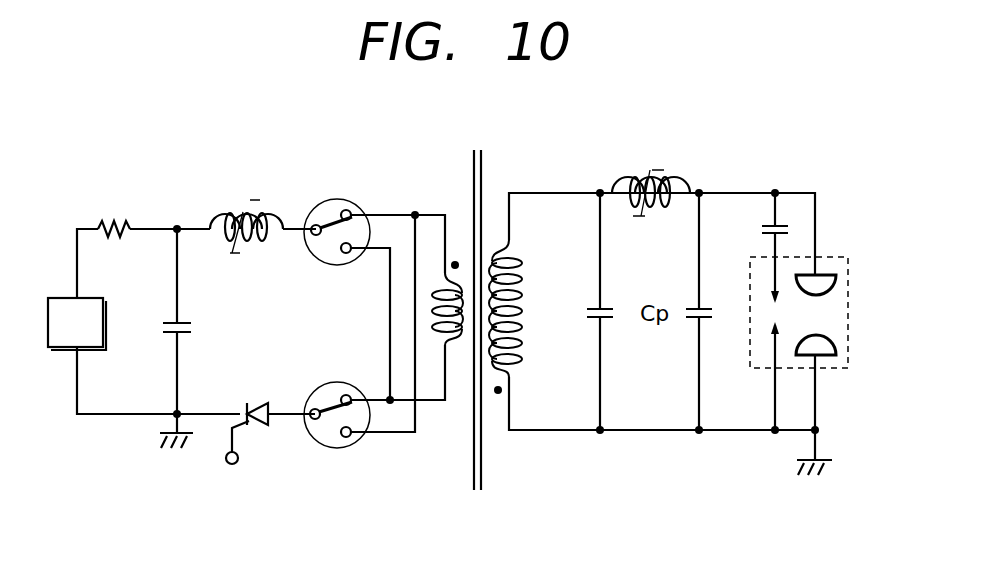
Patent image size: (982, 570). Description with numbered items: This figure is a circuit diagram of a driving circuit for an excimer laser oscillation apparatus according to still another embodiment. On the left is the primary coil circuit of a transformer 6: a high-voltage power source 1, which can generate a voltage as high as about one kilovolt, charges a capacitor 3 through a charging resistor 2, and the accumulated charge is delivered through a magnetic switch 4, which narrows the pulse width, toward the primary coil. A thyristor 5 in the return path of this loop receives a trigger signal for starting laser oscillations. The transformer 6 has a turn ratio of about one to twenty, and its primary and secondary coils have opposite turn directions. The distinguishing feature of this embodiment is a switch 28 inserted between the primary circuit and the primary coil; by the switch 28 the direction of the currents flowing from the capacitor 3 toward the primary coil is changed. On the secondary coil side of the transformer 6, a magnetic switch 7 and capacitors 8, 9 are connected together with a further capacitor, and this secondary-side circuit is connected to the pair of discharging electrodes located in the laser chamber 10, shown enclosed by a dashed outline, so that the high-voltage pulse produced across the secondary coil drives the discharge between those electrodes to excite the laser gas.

The high-voltage power source 1 is at (105, 312).
The charging resistor 2 is at (116, 223).
The capacitor 3 is at (186, 320).
The magnetic switch 4 is at (238, 210).
The thyristor 5 is at (257, 404).
The transformer 6 is at (480, 143).
The magnetic switch 7 is at (643, 176).
The capacitor 8 is at (608, 306).
The capacitor 9 is at (760, 227).
The laser chamber 10 is at (836, 257).
The switch 28 is at (352, 202).